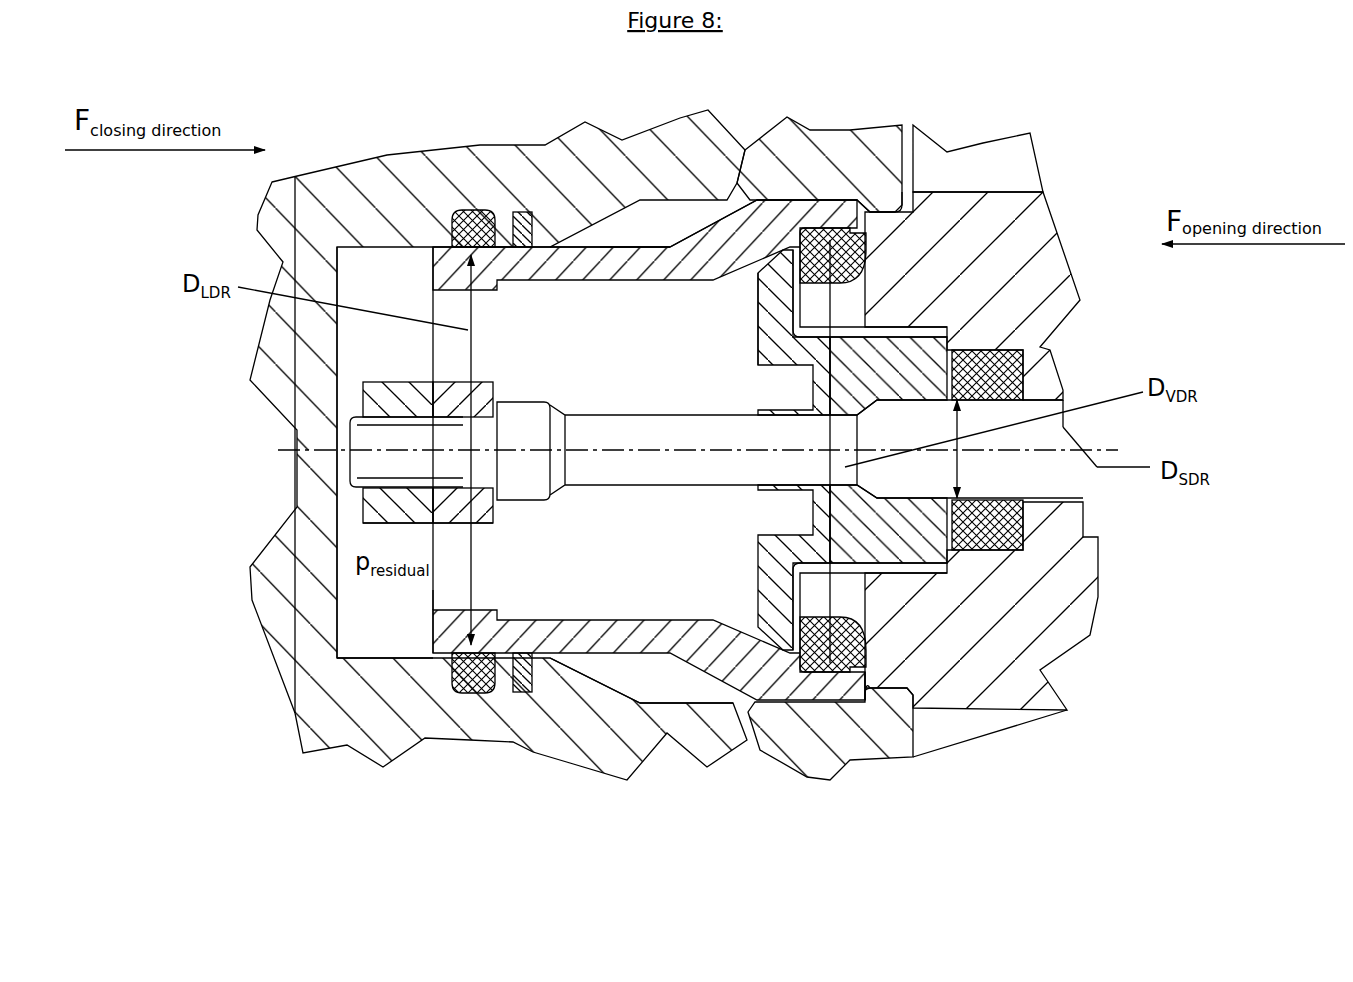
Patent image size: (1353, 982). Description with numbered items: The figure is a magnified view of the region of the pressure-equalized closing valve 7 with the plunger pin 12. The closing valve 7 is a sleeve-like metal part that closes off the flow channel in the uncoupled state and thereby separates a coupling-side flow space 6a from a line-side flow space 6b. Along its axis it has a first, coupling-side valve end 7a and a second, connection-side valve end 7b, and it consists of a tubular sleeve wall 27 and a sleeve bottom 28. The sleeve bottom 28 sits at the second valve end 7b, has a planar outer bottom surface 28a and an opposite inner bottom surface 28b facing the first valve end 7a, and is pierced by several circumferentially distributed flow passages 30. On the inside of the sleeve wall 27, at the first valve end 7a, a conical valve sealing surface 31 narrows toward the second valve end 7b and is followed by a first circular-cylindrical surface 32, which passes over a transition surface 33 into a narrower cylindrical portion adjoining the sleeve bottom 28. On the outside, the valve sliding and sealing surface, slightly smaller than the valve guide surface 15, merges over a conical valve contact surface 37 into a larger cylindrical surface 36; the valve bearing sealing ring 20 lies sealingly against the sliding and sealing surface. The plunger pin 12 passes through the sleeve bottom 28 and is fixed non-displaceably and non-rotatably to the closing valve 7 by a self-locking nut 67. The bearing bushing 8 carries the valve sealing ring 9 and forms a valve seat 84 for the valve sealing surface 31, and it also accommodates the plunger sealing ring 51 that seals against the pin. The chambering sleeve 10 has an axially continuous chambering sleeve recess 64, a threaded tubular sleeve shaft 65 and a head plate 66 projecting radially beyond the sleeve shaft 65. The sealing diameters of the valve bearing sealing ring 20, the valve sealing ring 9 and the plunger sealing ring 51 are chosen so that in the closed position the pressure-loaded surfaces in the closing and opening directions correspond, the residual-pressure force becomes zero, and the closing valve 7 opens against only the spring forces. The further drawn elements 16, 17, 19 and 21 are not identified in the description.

The coupling-side flow space 6a is at (830, 190).
The line-side flow space 6b is at (365, 332).
The closing valve 7 is at (592, 256).
The first, coupling-side valve end 7a is at (882, 197).
The second, connection-side valve end 7b is at (378, 350).
The bearing bushing 8 is at (990, 262).
The valve sealing ring 9 is at (833, 236).
The chambering sleeve 10 is at (893, 547).
The plunger pin 12 is at (522, 475).
The valve guide surface 15 is at (372, 655).
The gap 16 is at (605, 677).
The gap 17 is at (688, 697).
The gap 19 is at (505, 213).
The valve bearing sealing ring 20 is at (460, 212).
The support ring 21 is at (525, 212).
The tubular sleeve wall 27 is at (567, 246).
The sleeve bottom 28 is at (560, 355).
The outer bottom surface 28a is at (428, 508).
The inner bottom surface 28b is at (560, 355).
The flow passages 30 is at (457, 598).
The valve sealing surface 31 is at (880, 655).
The first circular-cylindrical surface 32 is at (741, 536).
The transition surface 33 is at (765, 620).
The cylindrical surface 36 is at (797, 193).
The conical valve contact surface 37 is at (715, 213).
The plunger sealing ring 51 is at (990, 372).
The chambering sleeve recess 64 is at (790, 387).
The sleeve shaft 65 is at (965, 541).
The head plate 66 is at (840, 705).
The self-locking nut 67 is at (377, 397).
The valve seat 84 is at (872, 640).